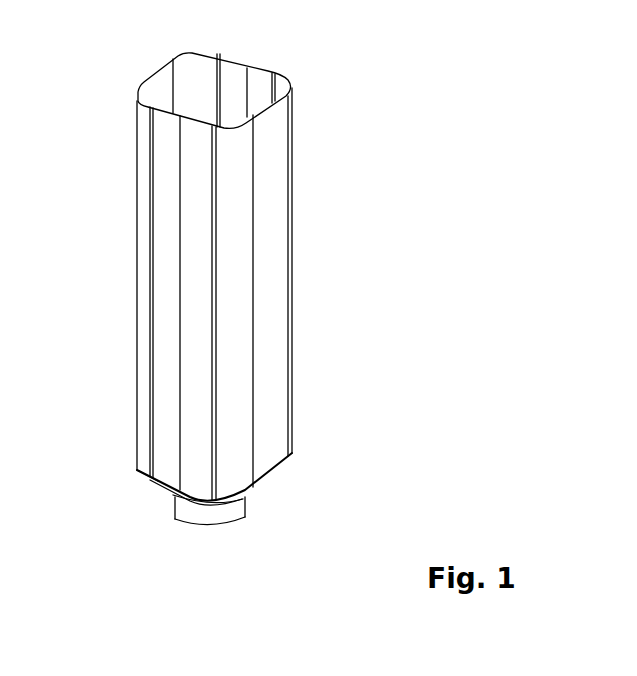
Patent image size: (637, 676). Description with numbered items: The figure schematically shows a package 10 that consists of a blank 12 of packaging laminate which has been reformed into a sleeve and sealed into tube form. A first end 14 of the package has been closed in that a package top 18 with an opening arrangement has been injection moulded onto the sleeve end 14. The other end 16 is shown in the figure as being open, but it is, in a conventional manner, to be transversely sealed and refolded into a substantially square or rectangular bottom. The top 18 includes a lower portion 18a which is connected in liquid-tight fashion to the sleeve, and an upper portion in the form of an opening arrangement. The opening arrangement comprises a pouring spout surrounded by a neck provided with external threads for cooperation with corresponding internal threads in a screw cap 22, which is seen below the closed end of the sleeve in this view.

The package 10 is at (323, 200).
The blank 12 is at (293, 312).
The first end 14 is at (293, 455).
The other end 16 is at (150, 83).
The package top 18 is at (167, 528).
The lower portion 18a is at (137, 473).
The screw cap 22 is at (237, 505).